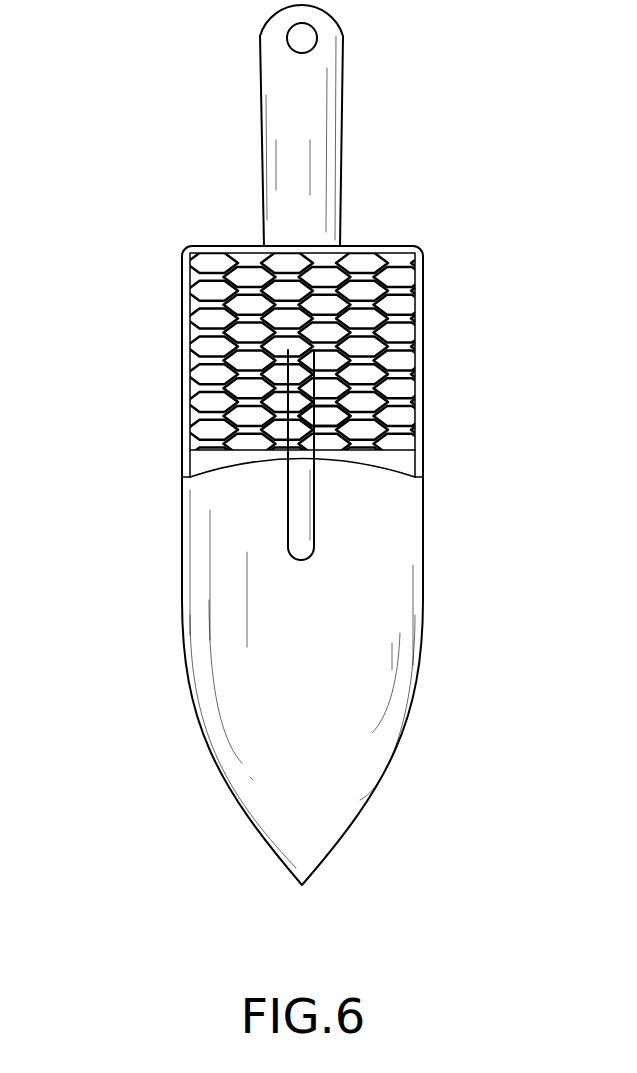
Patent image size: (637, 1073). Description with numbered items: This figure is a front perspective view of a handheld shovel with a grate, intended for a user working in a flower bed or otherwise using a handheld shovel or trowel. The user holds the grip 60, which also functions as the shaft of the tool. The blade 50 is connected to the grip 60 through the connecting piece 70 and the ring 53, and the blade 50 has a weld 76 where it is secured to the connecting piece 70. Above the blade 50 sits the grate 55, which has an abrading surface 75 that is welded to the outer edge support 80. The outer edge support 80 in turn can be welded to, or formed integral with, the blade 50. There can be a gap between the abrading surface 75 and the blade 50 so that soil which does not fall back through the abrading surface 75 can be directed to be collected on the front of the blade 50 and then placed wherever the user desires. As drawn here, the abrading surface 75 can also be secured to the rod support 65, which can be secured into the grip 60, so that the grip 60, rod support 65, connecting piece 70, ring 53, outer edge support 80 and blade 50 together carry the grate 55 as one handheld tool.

The blade 50 is at (392, 758).
The ring 53 is at (315, 333).
The grate 55 is at (132, 287).
The grip 60 is at (340, 107).
The rod support 65 is at (303, 278).
The connecting piece 70 is at (305, 408).
The abrading surface 75 is at (387, 307).
The weld 76 is at (300, 522).
The outer edge support 80 is at (200, 246).